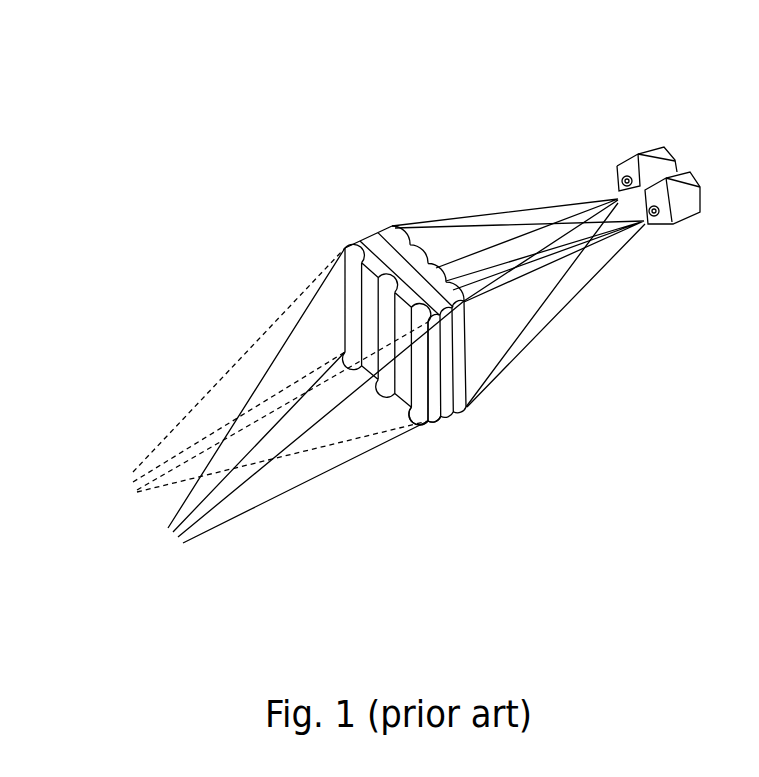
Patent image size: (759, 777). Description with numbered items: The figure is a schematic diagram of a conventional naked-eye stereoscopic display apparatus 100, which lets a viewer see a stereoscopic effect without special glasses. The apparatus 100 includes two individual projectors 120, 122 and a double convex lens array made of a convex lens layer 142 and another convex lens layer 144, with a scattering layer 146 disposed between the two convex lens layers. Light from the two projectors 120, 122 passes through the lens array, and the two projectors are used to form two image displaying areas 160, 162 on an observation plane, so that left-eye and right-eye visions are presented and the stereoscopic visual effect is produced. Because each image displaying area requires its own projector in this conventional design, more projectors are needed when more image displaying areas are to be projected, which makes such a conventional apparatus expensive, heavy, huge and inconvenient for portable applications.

The conventional stereoscopic display apparatus 100 is at (194, 89).
The projector 120 is at (647, 153).
The projector 122 is at (691, 178).
The convex lens layer 142 is at (431, 424).
The convex lens layer 144 is at (456, 410).
The scattering layer 146 is at (450, 416).
The image displaying area 160 is at (252, 379).
The image displaying area 162 is at (291, 406).